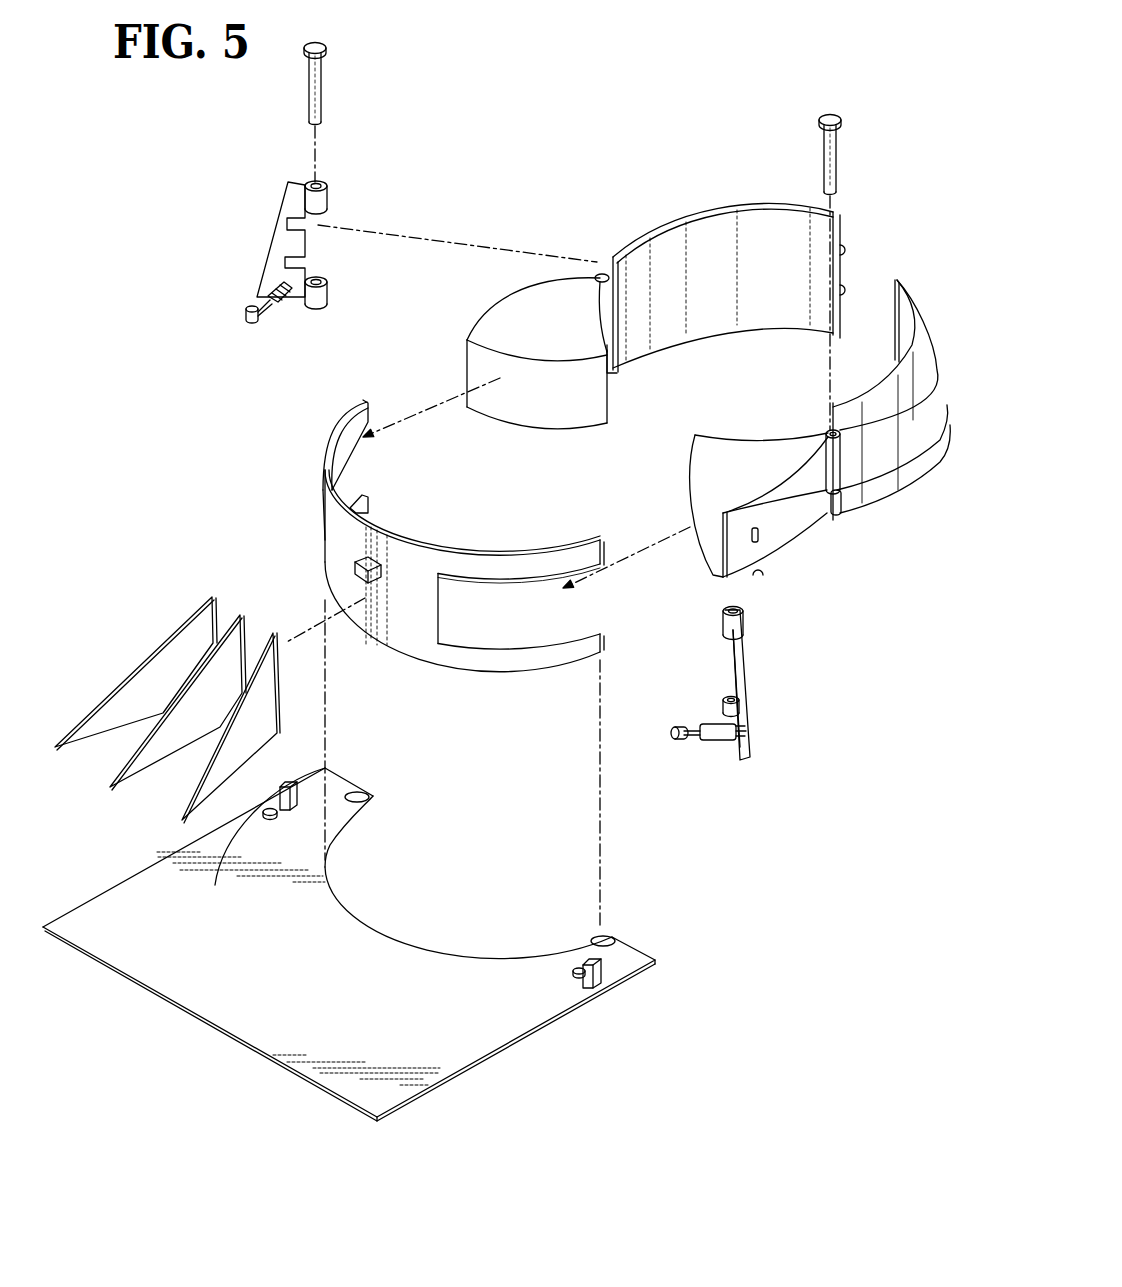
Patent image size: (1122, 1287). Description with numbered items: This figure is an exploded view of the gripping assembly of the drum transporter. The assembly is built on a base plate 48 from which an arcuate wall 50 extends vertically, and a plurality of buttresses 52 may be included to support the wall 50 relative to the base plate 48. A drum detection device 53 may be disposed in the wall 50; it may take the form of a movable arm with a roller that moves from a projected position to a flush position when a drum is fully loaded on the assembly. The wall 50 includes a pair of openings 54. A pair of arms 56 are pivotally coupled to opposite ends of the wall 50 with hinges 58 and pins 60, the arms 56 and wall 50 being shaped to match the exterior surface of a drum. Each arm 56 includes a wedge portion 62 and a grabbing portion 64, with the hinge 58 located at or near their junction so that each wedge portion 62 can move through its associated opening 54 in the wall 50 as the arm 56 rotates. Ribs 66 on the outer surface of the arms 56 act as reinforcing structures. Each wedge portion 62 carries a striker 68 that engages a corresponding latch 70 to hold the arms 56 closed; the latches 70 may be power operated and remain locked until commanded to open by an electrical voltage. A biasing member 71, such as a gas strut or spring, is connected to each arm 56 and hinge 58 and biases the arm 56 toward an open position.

The base plate 48 is at (430, 1060).
The wall 50 is at (436, 568).
The buttresses 52 is at (170, 588).
The drum detection device 53 is at (355, 567).
The openings 54 is at (342, 478).
The arms 56 is at (786, 322).
The hinges 58 is at (297, 180).
The pins 60 is at (320, 95).
The wedge portion 62 is at (738, 498).
The grabbing portion 64 is at (760, 290).
The ribs 66 is at (928, 362).
The striker 68 is at (762, 576).
The latches 70 is at (648, 1040).
The biasing member 71 is at (278, 313).